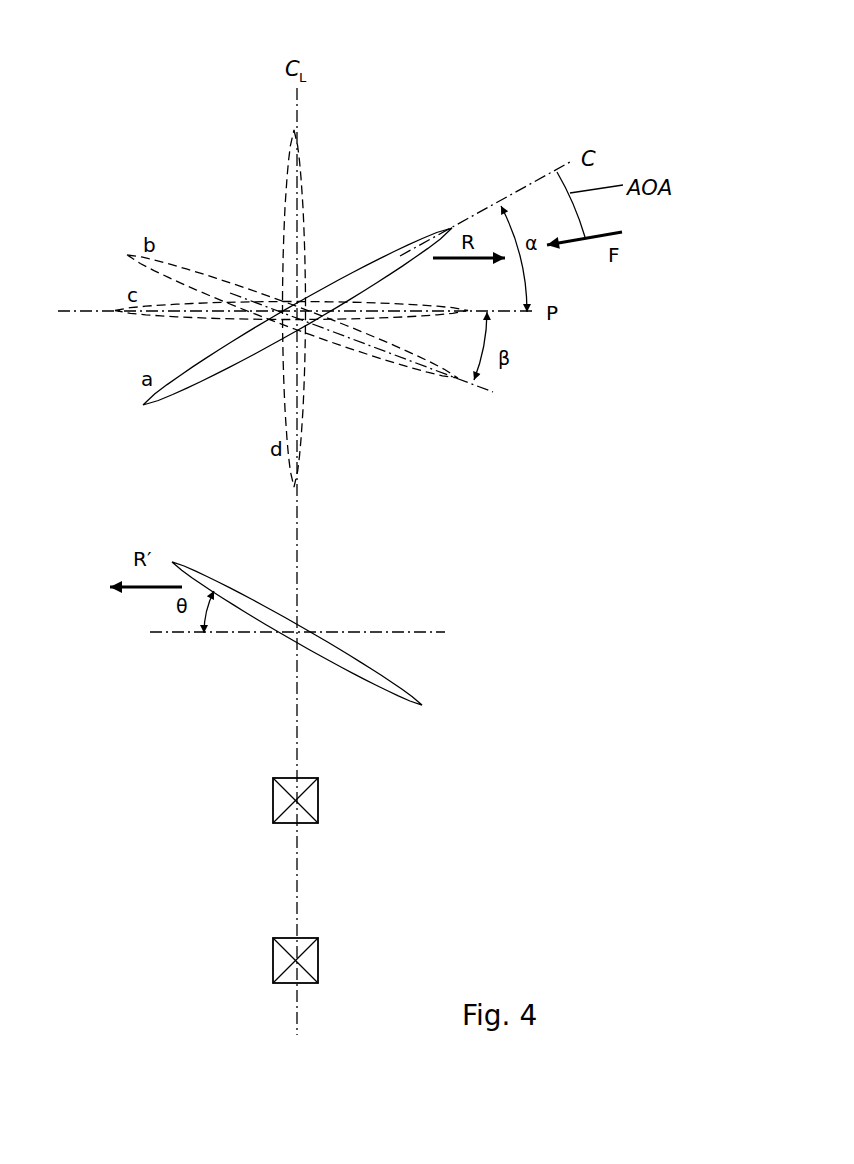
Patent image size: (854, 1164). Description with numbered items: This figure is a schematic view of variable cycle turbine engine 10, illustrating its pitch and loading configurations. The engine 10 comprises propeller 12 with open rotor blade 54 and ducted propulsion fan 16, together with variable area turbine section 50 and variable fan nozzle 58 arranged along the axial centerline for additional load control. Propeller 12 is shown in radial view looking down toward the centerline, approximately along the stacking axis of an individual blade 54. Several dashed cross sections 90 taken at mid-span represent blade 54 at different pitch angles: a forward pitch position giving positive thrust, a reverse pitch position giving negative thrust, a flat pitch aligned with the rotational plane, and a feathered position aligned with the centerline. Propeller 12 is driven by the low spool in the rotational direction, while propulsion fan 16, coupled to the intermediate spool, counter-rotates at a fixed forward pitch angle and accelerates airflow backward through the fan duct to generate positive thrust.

The variable cycle turbine engine 10 is at (545, 102).
The propeller 12 is at (127, 212).
The ducted propulsion fan 16 is at (228, 587).
The variable area turbine section 50 is at (288, 938).
The open rotor blade 54 is at (377, 263).
The variable fan nozzle 58 is at (288, 778).
The cross sections 90 is at (187, 303).